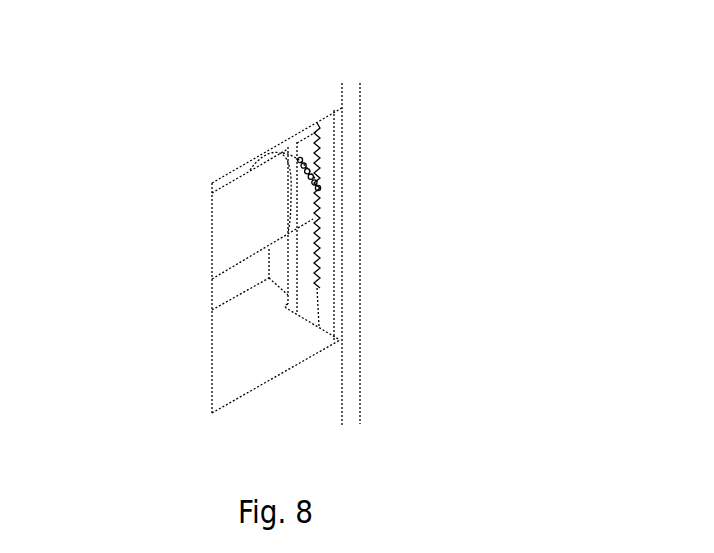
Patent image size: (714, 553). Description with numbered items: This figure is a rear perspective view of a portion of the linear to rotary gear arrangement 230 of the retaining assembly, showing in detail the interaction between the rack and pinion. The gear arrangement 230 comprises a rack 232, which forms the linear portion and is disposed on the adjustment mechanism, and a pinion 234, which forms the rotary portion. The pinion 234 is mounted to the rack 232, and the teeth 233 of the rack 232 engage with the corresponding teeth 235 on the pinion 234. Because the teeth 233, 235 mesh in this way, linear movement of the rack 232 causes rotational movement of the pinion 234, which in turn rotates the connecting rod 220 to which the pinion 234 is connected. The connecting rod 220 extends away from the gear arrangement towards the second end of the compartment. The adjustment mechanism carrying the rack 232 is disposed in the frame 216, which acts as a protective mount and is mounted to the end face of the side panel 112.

The linear to rotary gear arrangement 230 is at (400, 55).
The teeth 235 is at (306, 166).
The pinion 234 is at (281, 173).
The connecting rod 220 is at (232, 220).
The teeth 233 is at (335, 147).
The rack 232 is at (330, 213).
The frame 216 is at (350, 258).
The side panel 112 is at (312, 398).